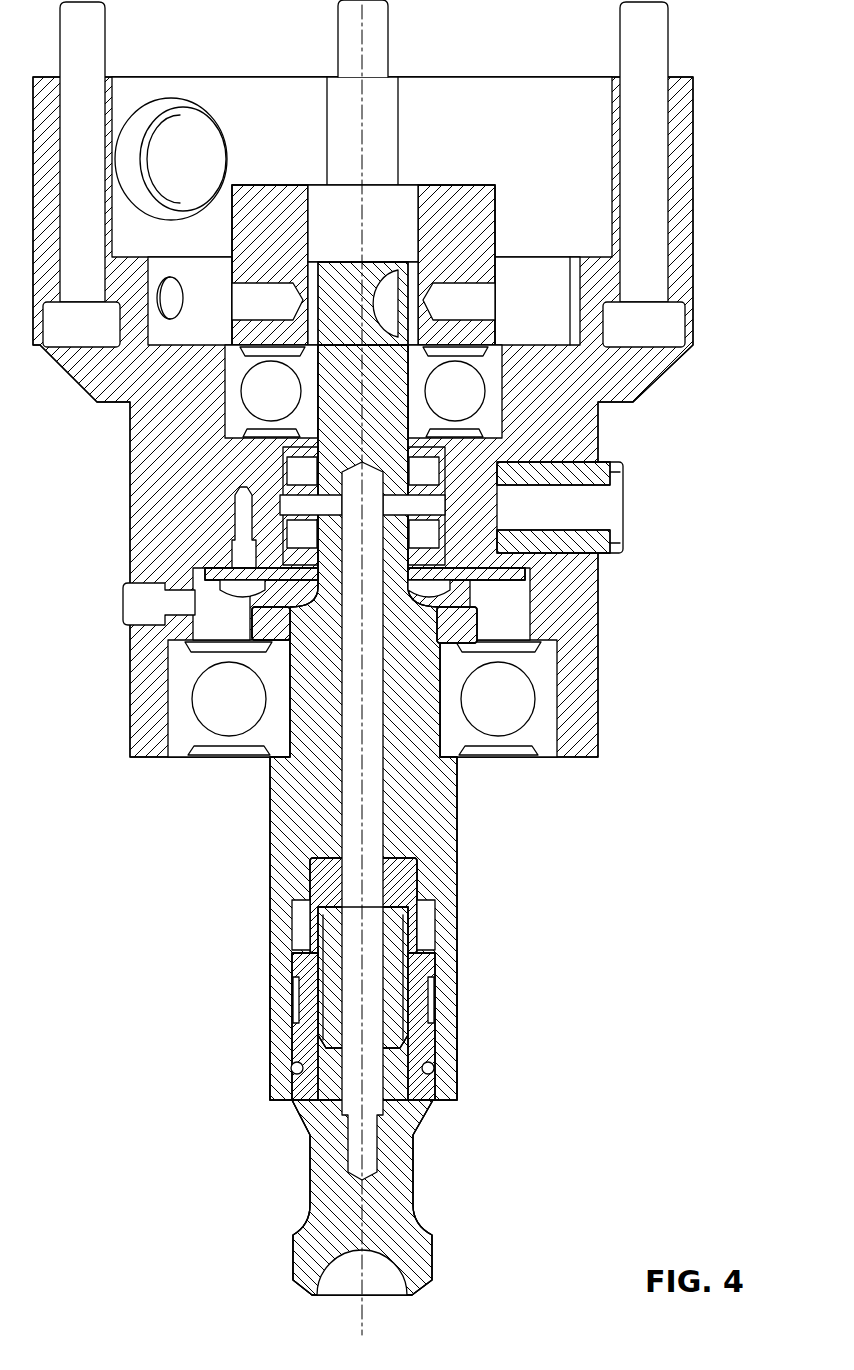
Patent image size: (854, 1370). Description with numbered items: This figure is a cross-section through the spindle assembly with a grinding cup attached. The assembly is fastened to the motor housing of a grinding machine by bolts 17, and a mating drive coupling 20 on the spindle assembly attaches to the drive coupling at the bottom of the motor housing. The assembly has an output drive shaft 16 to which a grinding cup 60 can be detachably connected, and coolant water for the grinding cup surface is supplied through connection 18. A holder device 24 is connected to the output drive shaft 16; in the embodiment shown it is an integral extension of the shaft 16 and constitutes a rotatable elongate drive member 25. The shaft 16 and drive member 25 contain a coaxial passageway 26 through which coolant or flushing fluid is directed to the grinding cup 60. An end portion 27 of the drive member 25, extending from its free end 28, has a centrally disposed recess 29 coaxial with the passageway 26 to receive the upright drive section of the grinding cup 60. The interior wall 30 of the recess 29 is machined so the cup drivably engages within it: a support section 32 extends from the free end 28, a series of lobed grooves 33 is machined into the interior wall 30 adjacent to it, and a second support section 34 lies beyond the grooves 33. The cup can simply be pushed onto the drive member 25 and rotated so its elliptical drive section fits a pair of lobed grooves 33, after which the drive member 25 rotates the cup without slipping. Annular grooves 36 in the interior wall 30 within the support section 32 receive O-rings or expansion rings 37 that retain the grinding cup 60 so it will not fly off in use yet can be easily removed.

The output drive shaft 16 is at (478, 850).
The bolts 17 is at (647, 50).
The connection 18 is at (624, 466).
The mating drive coupling 20 is at (388, 210).
The holder device 24 is at (470, 992).
The rotatable elongate drive member 25 is at (273, 1027).
The coaxial passageway 26 is at (372, 758).
The end portion 27 is at (470, 1064).
The free end 28 is at (443, 1103).
The recess 29 is at (302, 933).
The interior wall 30 is at (427, 903).
The support section 32 is at (257, 952).
The lobed grooves 33 is at (430, 940).
The second support section 34 is at (322, 878).
The annular grooves 36 is at (434, 1068).
The O-rings or expansion rings 37 is at (295, 1068).
The grinding cup 60 is at (408, 1235).